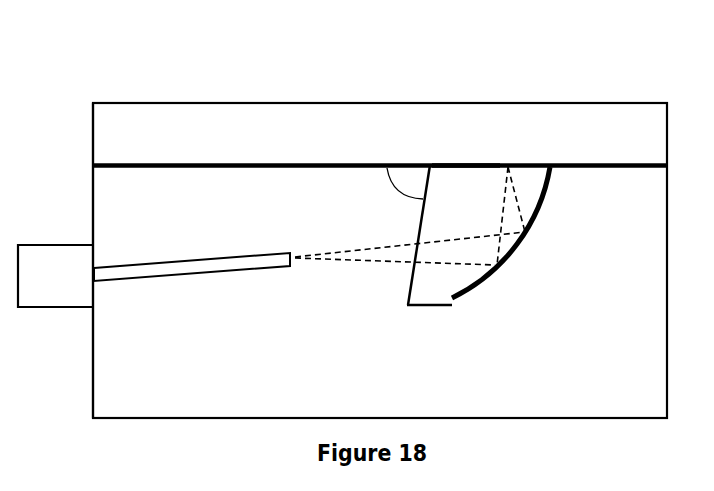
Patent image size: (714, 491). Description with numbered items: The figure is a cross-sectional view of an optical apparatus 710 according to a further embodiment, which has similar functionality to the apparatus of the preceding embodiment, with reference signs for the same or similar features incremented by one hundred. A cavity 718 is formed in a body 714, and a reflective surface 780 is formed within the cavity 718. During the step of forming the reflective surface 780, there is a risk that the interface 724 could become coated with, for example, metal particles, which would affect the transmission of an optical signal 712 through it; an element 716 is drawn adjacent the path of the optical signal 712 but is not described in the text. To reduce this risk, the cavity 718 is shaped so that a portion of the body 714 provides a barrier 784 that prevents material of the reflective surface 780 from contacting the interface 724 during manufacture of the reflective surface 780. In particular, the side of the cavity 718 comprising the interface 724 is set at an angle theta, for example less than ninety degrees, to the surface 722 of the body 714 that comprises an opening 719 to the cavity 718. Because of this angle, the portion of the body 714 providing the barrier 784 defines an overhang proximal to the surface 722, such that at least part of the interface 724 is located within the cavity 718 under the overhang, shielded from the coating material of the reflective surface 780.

The optical apparatus 710 is at (65, 69).
The optical signal 712 is at (410, 265).
The body 714 is at (100, 183).
The optical fiber 716 is at (172, 262).
The cavity 718 is at (475, 217).
The opening 719 is at (460, 162).
The surface 722 is at (275, 162).
The interface 724 is at (416, 277).
The reflective surface 780 is at (547, 173).
The barrier 784 is at (430, 160).